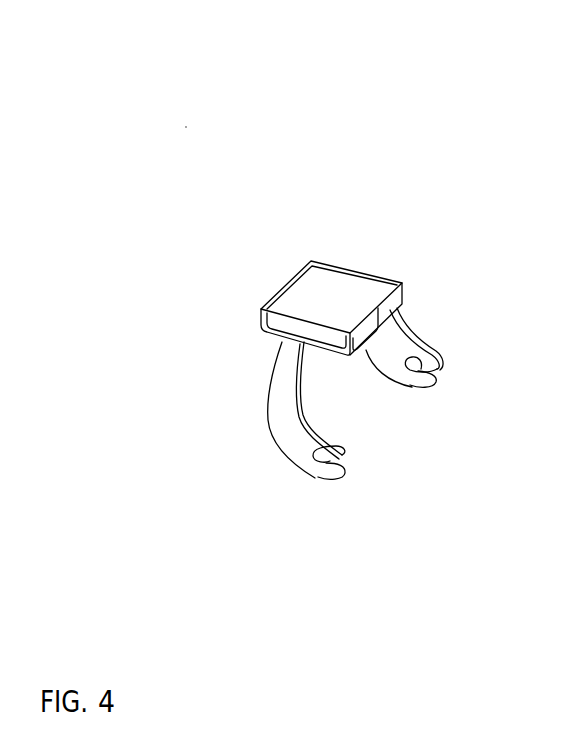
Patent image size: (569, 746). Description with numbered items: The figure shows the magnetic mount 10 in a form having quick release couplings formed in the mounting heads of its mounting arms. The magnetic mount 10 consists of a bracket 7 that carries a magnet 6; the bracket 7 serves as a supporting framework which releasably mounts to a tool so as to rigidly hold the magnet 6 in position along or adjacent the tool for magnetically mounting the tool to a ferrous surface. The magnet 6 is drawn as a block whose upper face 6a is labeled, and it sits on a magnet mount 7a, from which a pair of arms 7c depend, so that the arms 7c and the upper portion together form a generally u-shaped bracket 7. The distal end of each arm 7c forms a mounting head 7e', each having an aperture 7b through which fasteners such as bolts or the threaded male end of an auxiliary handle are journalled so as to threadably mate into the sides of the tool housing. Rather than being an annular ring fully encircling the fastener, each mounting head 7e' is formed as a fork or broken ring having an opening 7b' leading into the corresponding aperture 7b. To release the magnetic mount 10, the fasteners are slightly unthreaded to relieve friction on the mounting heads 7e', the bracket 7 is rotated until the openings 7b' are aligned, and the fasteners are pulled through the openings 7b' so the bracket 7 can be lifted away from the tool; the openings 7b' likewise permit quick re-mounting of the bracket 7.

The magnetic mount 10 is at (186, 127).
The magnet 6 is at (332, 301).
The top surface of housing 6a is at (353, 281).
The bracket 7 is at (298, 357).
The magnet mount 7a is at (396, 308).
The aperture 7b is at (384, 450).
The opening 7b' is at (417, 425).
The arm 7c is at (368, 356).
The mounting head 7e' is at (389, 383).